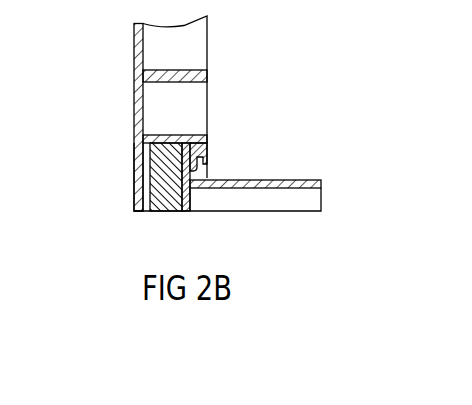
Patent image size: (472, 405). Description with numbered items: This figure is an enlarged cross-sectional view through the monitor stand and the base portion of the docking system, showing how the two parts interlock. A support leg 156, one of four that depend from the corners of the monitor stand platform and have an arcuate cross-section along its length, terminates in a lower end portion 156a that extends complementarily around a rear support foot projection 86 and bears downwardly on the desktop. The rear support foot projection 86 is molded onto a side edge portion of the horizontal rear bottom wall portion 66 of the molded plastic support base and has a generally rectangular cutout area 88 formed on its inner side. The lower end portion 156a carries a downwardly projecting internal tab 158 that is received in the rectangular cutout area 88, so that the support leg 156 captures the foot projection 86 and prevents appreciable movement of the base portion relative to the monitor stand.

The support leg 156 is at (140, 48).
The lower end portion 156a is at (138, 189).
The rear support foot projection 86 is at (165, 207).
The rectangular cutout area 88 is at (202, 175).
The internal tab 158 is at (203, 148).
The rear bottom wall portion 66 is at (285, 180).